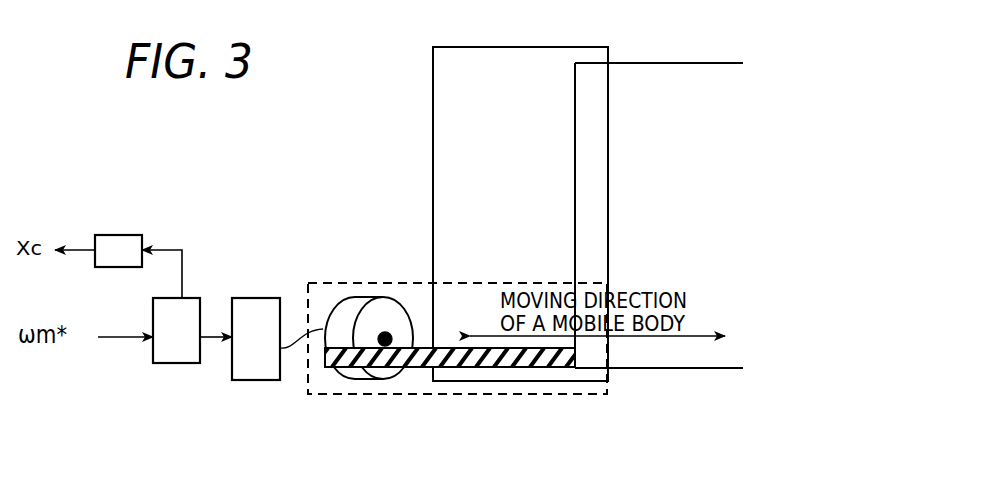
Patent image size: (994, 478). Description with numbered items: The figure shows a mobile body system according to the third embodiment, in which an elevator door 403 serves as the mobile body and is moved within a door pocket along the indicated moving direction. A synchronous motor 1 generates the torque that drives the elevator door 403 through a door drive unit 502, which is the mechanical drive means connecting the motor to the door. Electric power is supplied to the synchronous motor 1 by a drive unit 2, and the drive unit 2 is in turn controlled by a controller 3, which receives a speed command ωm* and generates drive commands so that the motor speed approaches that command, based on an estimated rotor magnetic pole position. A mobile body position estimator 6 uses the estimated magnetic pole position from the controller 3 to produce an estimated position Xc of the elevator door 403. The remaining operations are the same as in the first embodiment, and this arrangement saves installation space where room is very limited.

The synchronous motor 1 is at (352, 300).
The drive unit 2 is at (252, 380).
The controller 3 is at (177, 364).
The mobile body position estimator 6 is at (117, 235).
The elevator door 403 is at (656, 63).
The door drive unit 502 is at (387, 348).